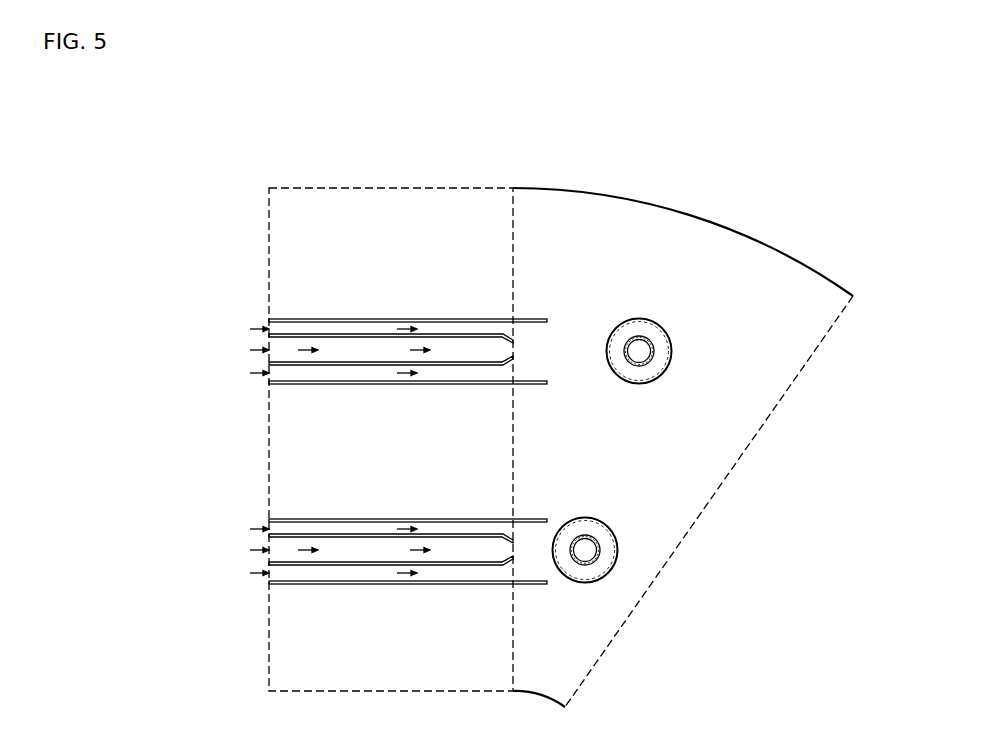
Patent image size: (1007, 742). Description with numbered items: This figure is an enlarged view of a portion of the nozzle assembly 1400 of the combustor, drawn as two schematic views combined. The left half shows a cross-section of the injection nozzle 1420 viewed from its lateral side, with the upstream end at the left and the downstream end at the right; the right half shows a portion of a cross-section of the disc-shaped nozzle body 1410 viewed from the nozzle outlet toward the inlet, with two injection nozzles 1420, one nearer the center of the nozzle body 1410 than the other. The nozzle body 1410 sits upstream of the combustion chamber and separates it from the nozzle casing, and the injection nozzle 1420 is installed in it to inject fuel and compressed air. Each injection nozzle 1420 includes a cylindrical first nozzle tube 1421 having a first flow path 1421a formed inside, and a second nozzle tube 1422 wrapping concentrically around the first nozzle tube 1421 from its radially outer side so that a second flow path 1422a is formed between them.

The nozzle assembly 1400 is at (285, 131).
The nozzle body 1410 is at (650, 203).
The injection nozzle 1420 is at (469, 460).
The first nozzle tube 1421 is at (342, 384).
The second nozzle tube 1422 is at (293, 365).
The first flow path 1421a is at (289, 349).
The second flow path 1422a is at (348, 328).